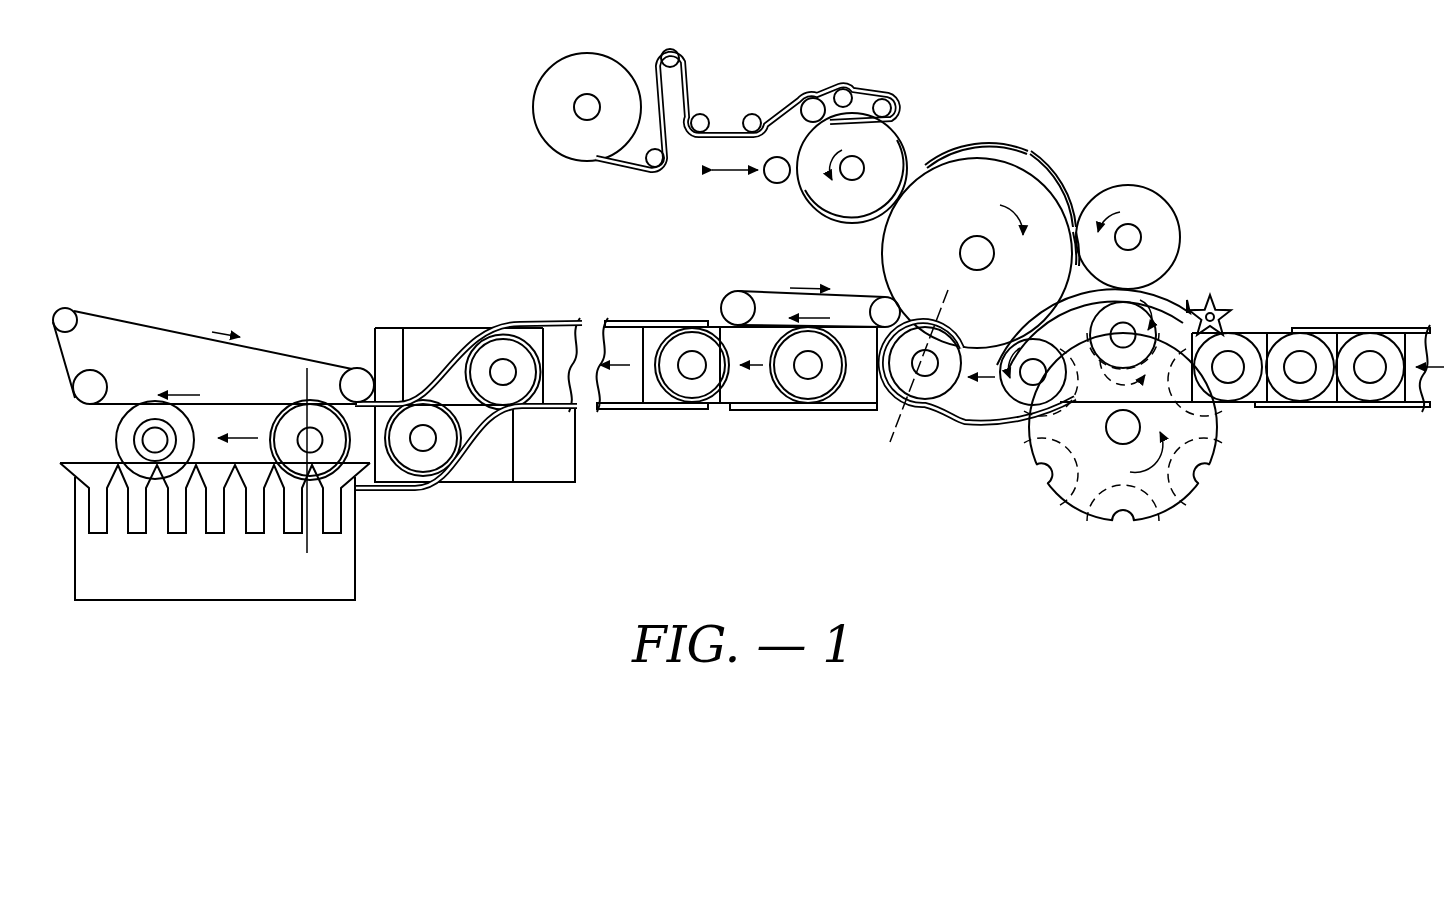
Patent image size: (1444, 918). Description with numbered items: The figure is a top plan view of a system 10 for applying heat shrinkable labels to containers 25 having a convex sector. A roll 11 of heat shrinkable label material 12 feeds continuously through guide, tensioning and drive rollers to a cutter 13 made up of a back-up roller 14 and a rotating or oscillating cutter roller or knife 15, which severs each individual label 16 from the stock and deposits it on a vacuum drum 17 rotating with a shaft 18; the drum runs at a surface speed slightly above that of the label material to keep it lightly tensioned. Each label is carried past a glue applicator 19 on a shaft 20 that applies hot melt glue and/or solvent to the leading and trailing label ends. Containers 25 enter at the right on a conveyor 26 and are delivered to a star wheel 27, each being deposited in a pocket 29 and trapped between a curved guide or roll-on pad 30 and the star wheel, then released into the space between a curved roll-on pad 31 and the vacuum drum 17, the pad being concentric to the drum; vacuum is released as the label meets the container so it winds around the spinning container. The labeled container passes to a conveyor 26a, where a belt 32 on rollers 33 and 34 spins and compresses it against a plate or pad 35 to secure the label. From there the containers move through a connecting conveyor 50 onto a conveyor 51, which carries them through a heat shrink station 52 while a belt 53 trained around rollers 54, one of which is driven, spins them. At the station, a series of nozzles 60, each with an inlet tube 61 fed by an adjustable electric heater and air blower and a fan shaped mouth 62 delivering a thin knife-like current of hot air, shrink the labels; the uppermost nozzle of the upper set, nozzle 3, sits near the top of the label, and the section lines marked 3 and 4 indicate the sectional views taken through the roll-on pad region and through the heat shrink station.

The system 10 is at (1055, 84).
The roll 11 is at (587, 107).
The heat shrinkable label material 12 is at (627, 172).
The cutter 13 is at (802, 218).
The back-up roller 14 is at (852, 168).
The cutter roller or knife 15 is at (777, 183).
The label 16 is at (982, 153).
The vacuum drum 17 is at (977, 253).
The shaft 18 is at (985, 256).
The glue applicator 19 is at (1150, 188).
The shaft 20 is at (1128, 237).
The containers 25 is at (1380, 392).
The conveyor 26 is at (1340, 340).
The conveyor 26a is at (632, 322).
The star wheel 27 is at (1226, 452).
The pocket 29 is at (1210, 462).
The curved guide or roll-on pad 30 is at (1172, 293).
The curved roll-on pad 31 is at (960, 425).
The belt 32 is at (770, 292).
The roller 33 is at (728, 313).
The roller 34 is at (870, 307).
The plate or pad 35 is at (767, 412).
The connecting conveyor 50 is at (485, 348).
The conveyor 51 is at (560, 456).
The heat shrink station 52 is at (373, 533).
The belt 53 is at (302, 350).
The rollers 54 is at (70, 312).
The nozzles 60 is at (320, 545).
The inlet tube 61 is at (250, 534).
The fan shaped mouth 62 is at (233, 443).
The nozzle 3 is at (948, 290).
The section line 4- 4 is at (307, 368).